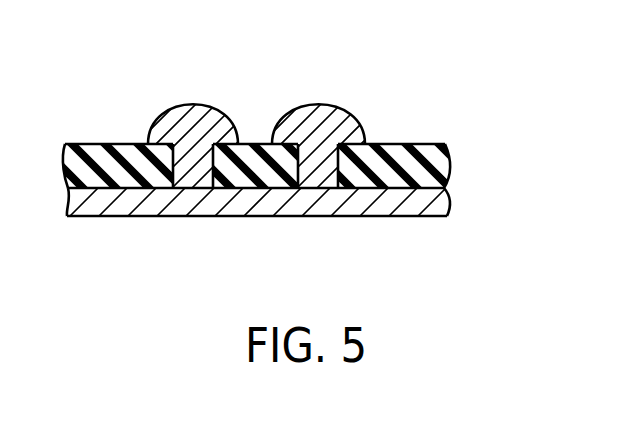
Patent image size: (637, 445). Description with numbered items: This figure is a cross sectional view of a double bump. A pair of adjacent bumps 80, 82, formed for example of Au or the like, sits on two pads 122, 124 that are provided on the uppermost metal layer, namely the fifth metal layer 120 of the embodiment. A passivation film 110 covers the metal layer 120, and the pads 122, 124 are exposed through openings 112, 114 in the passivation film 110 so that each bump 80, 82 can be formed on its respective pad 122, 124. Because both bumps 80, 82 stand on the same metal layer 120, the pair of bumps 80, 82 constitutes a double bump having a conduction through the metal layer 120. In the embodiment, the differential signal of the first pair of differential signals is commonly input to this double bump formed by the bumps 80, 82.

The bump 80 is at (195, 103).
The bump 82 is at (320, 103).
The passivation film 110 is at (281, 130).
The opening 112 is at (172, 163).
The opening 114 is at (334, 163).
The fifth metal layer 120 is at (284, 229).
The pad 122 is at (194, 183).
The pad 124 is at (318, 183).